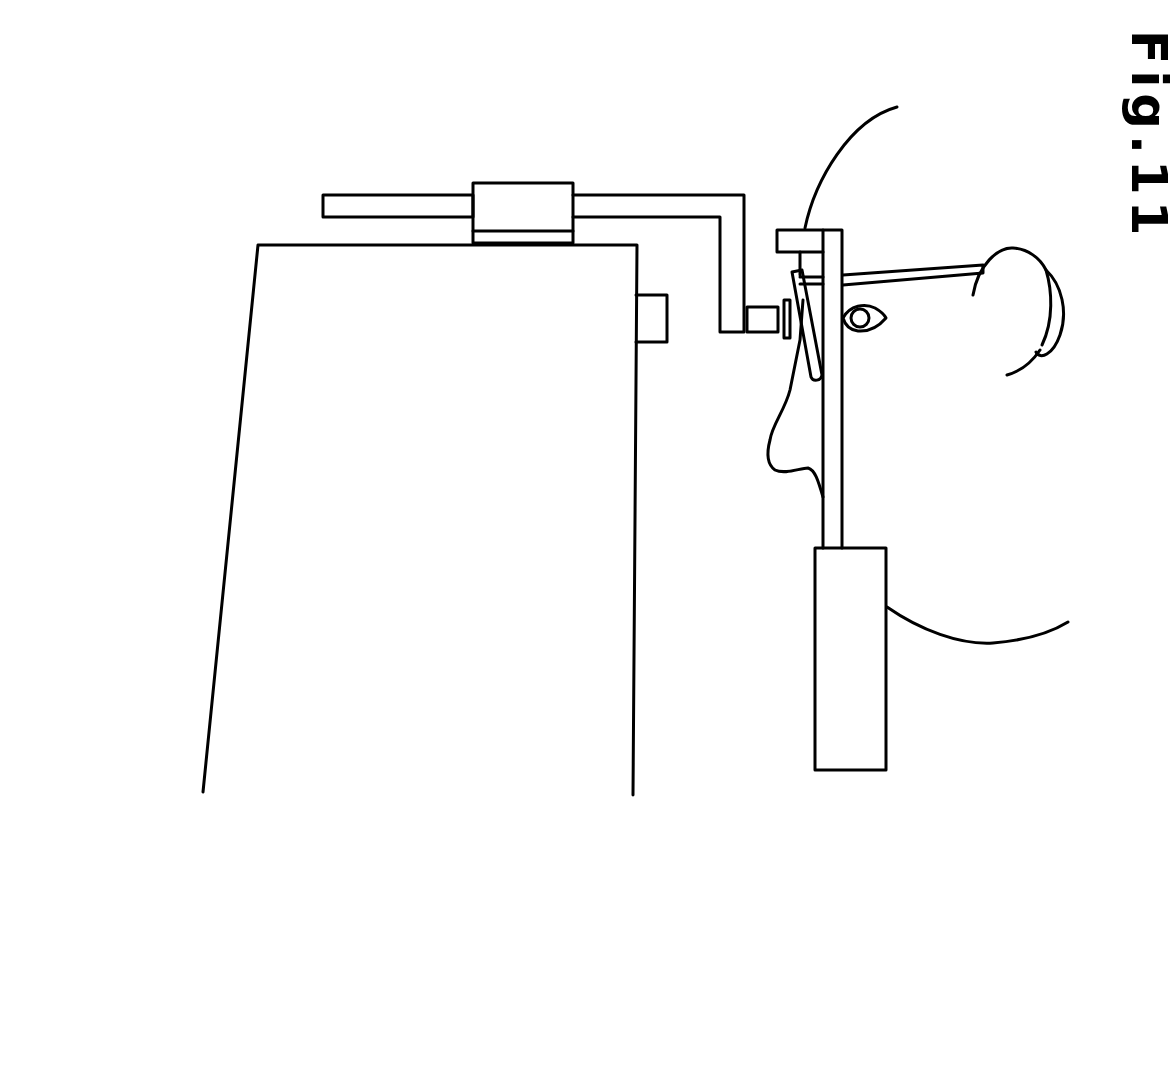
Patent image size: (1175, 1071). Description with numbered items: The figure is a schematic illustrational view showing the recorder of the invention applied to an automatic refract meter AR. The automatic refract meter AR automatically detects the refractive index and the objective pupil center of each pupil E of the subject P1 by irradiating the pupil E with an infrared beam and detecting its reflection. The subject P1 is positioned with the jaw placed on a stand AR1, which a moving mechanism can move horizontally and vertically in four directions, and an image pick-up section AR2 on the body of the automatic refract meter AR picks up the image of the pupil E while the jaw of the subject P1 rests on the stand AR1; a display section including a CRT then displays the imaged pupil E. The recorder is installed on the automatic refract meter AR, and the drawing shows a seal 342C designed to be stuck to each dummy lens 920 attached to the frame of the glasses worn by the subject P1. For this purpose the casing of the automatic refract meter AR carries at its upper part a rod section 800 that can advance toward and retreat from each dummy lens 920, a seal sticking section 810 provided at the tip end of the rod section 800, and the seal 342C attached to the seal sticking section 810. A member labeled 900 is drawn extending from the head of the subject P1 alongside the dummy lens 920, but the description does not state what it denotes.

The automatic refract meter AR is at (278, 240).
The stand AR1 is at (886, 717).
The image pick-up section AR2 is at (667, 345).
The rod section 800 is at (593, 195).
The seal sticking section 810 is at (763, 332).
The seal 342C is at (786, 300).
The dummy lens 920 is at (797, 270).
The horizontal head-mounted arm 900 is at (923, 272).
The subject P1 is at (843, 157).
The pupil E is at (857, 331).